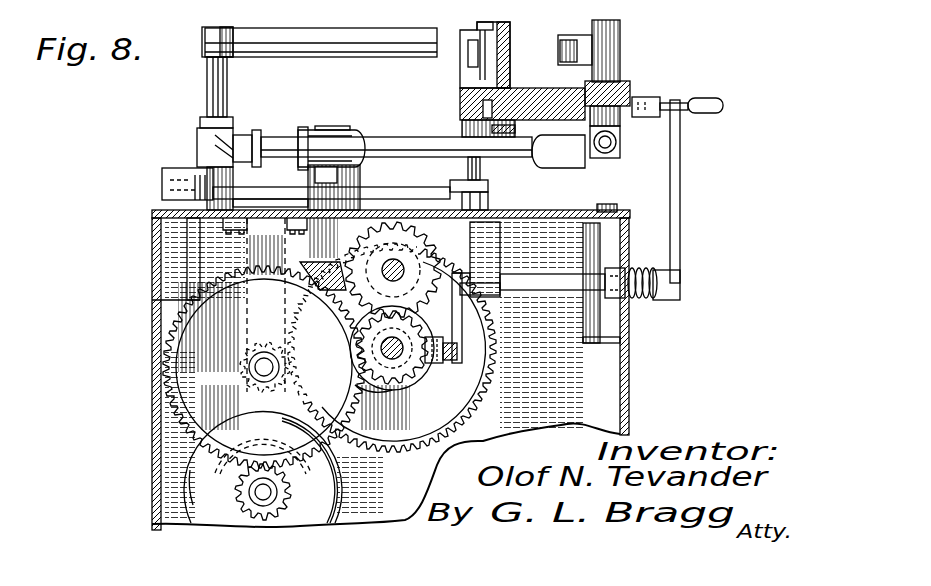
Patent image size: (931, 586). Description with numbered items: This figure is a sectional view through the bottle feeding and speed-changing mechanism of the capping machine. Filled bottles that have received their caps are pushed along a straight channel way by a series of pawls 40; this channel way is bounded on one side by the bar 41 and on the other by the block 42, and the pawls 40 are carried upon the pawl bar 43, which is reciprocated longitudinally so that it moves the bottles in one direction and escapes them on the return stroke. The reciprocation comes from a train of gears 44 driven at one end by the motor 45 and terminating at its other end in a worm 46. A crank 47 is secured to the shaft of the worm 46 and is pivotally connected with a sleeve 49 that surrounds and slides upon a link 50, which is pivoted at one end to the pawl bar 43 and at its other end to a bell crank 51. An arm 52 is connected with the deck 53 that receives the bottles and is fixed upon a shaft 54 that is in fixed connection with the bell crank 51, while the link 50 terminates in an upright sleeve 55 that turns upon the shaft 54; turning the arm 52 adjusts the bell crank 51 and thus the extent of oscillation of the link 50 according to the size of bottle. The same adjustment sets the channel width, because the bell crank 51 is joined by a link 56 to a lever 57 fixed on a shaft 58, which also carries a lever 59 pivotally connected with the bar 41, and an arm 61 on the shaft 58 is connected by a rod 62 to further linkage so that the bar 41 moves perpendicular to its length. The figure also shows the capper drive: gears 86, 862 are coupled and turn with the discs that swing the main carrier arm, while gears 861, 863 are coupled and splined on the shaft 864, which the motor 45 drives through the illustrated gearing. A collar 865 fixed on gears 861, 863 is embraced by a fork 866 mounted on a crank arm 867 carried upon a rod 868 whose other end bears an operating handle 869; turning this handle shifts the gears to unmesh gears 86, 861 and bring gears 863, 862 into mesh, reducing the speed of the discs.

The pawl 40 is at (620, 38).
The bar 41 is at (505, 25).
The block 42 is at (323, 231).
The pawl bar 43 is at (622, 82).
The train of gears 44 is at (200, 372).
The motor 45 is at (205, 470).
The worm 46 is at (300, 272).
The crank 47 is at (330, 177).
The sleeve 49 is at (325, 142).
The link 50 is at (388, 145).
The bell crank 51 is at (155, 184).
The arm 52 is at (372, 35).
The deck 53 is at (524, 97).
The shaft 54 is at (220, 88).
The upright sleeve 55 is at (222, 135).
The link 56 is at (401, 188).
The lever 57 is at (488, 198).
The shaft 58 is at (468, 170).
The lever 59 is at (465, 50).
The arm 61 is at (502, 136).
The rod 62 is at (487, 110).
The gear 86 is at (420, 296).
The gear 861 is at (403, 377).
The gear 862 is at (372, 281).
The gear 863 is at (354, 378).
The shaft 864 is at (370, 347).
The collar 865 is at (385, 388).
The fork 866 is at (440, 362).
The crank arm 867 is at (457, 356).
The rod 868 is at (553, 281).
The operating handle 869 is at (700, 111).